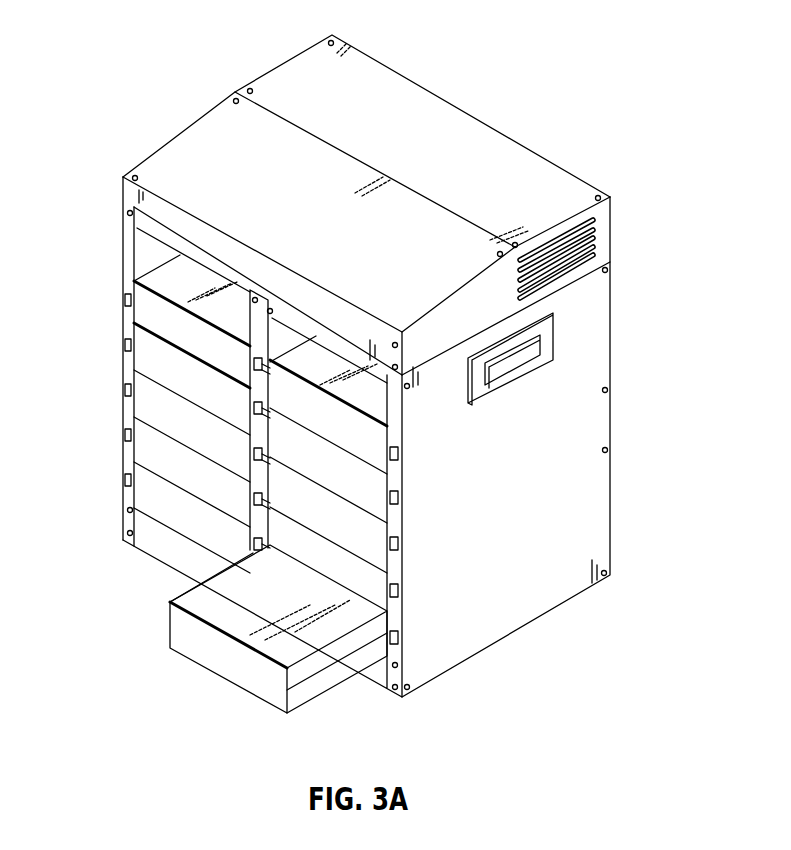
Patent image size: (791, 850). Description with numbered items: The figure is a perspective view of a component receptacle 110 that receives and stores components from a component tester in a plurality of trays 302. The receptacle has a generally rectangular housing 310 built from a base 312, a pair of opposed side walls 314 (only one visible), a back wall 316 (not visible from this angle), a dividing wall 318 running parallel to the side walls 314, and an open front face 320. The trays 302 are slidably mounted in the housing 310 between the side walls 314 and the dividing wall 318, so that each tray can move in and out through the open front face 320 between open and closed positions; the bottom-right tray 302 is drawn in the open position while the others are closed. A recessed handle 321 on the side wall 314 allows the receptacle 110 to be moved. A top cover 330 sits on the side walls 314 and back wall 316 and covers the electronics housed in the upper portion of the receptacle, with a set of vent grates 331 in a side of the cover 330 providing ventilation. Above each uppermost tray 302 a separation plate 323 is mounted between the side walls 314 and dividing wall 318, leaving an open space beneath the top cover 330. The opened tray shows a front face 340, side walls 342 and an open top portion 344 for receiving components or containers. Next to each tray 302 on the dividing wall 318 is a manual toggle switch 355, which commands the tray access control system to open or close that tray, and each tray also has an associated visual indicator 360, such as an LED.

The component receptacle 110 is at (575, 72).
The tray 302 is at (142, 315).
The housing 310 is at (630, 292).
The base 312 is at (398, 673).
The side wall 314 is at (565, 413).
The back wall 316 is at (612, 308).
The dividing wall 318 is at (260, 320).
The open front face 320 is at (126, 247).
The recessed handle 321 is at (553, 340).
The separation plate 323 is at (190, 295).
The top cover 330 is at (183, 140).
The vent grate 331 is at (597, 230).
The front face 340 is at (180, 632).
The side wall 342 is at (312, 686).
The open top portion 344 is at (200, 598).
The manual toggle switch 355 is at (267, 365).
The visual indicator 360 is at (124, 302).